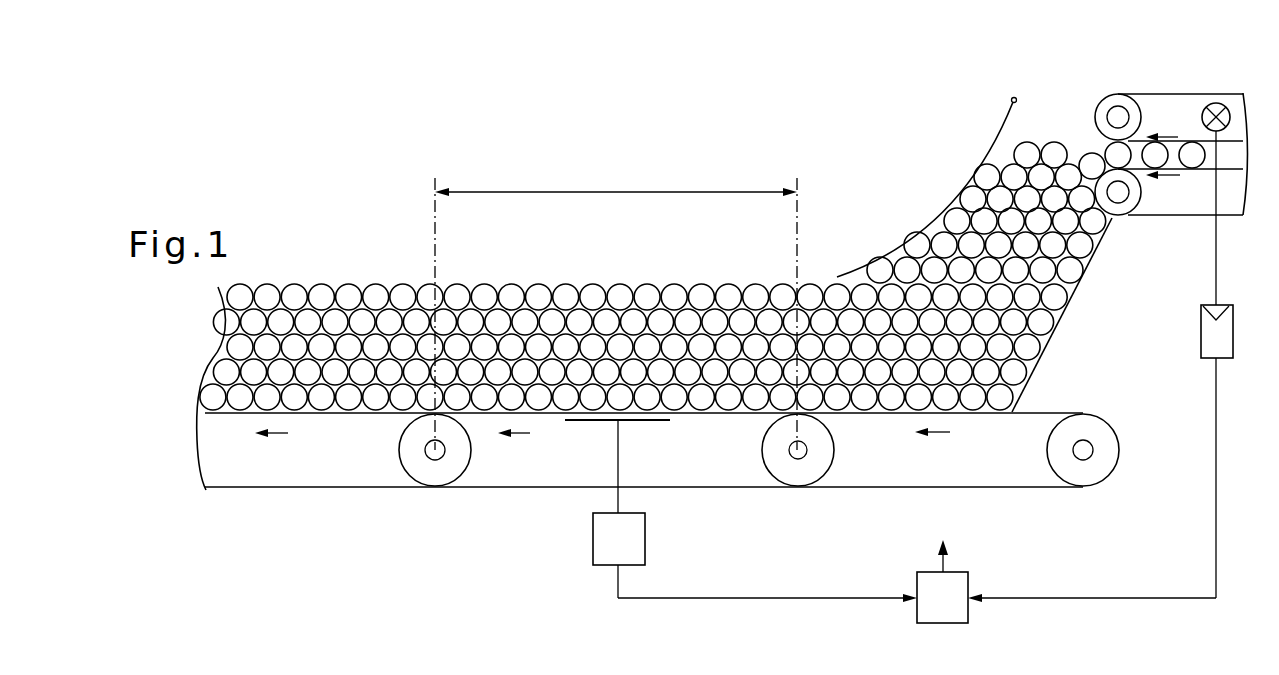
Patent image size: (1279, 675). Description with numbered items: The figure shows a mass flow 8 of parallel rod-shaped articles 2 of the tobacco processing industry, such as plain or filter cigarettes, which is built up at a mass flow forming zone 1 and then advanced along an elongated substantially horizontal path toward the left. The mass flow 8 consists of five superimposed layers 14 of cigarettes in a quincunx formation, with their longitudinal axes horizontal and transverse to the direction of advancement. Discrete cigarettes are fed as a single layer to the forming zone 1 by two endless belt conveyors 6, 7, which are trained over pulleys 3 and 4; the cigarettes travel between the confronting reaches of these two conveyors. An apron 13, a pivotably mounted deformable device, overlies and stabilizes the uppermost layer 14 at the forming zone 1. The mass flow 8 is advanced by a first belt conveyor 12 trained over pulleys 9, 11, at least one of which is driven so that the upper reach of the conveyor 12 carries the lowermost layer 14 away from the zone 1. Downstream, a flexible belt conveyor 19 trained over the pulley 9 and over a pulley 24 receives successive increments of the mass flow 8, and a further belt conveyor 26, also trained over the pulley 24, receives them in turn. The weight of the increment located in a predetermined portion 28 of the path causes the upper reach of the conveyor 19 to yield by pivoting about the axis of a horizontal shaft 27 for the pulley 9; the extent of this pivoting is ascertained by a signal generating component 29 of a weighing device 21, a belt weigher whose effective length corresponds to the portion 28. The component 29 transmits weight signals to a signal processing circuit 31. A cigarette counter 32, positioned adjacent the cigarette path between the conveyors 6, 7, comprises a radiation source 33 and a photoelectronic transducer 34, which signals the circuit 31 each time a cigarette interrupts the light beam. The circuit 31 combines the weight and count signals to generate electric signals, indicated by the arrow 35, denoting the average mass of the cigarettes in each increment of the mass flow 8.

The mass flow forming zone 1 is at (1052, 100).
The rod-shaped articles 2 is at (1197, 157).
The pulley 3 is at (1116, 100).
The pulley 4 is at (1122, 210).
The endless belt conveyor 6 is at (1230, 140).
The endless belt conveyor 7 is at (1225, 173).
The mass flow 8 is at (653, 276).
The pulley 9 is at (790, 485).
The pulley 11 is at (1105, 456).
The belt conveyor 12 is at (1043, 411).
The apron 13 is at (922, 214).
The layer 14 is at (352, 288).
The endless belt conveyor 19 is at (556, 415).
The weighing device 21 is at (588, 458).
The pulley 24 is at (420, 471).
The belt conveyor 26 is at (338, 415).
The horizontal shaft 27 is at (762, 450).
The predetermined portion of the path 28 is at (616, 304).
The signal generating component 29 is at (606, 540).
The signal processing circuit 31 is at (928, 590).
The cigarette counter 32 is at (1180, 270).
The radiation source 33 is at (1213, 104).
The photoelectronic transducer 34 is at (1226, 337).
The electric signals 35 is at (948, 568).